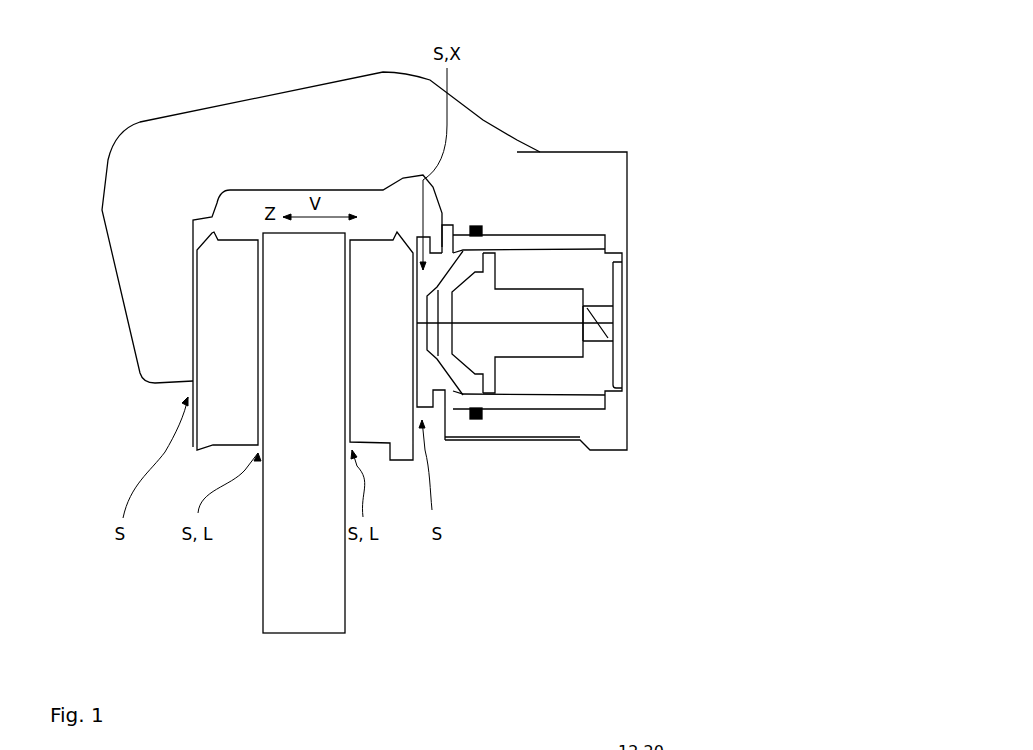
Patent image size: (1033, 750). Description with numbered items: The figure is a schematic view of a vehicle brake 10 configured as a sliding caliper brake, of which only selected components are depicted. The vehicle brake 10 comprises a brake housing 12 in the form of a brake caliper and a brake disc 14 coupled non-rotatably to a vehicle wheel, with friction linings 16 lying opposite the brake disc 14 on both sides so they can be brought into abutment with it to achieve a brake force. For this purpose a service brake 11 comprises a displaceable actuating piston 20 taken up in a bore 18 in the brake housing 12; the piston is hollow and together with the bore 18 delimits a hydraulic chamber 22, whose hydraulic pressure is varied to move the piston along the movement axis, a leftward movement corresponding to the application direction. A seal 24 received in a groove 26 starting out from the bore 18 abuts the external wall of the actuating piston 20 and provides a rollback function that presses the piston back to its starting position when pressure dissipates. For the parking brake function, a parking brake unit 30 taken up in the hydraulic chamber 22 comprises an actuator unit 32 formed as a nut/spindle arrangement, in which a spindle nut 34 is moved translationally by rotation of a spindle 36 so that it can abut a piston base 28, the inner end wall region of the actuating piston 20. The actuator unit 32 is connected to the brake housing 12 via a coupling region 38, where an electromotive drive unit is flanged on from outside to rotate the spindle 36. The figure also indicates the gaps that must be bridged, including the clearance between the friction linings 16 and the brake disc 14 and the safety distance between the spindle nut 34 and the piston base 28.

The vehicle brake 10 is at (648, 92).
The service brake 11 is at (665, 232).
The brake housing 12 is at (577, 217).
The brake disc 14 is at (305, 448).
The friction linings 16 is at (227, 380).
The bore 18 is at (452, 222).
The actuating piston 20 is at (503, 402).
The hydraulic chamber 22 is at (542, 378).
The seal 24 is at (540, 152).
The groove 26 is at (477, 228).
The piston base 28 is at (448, 400).
The parking brake unit 30 is at (672, 272).
The actuator unit 32 is at (598, 352).
The spindle nut 34 is at (637, 363).
The spindle 36 is at (612, 323).
The coupling region 38 is at (627, 293).